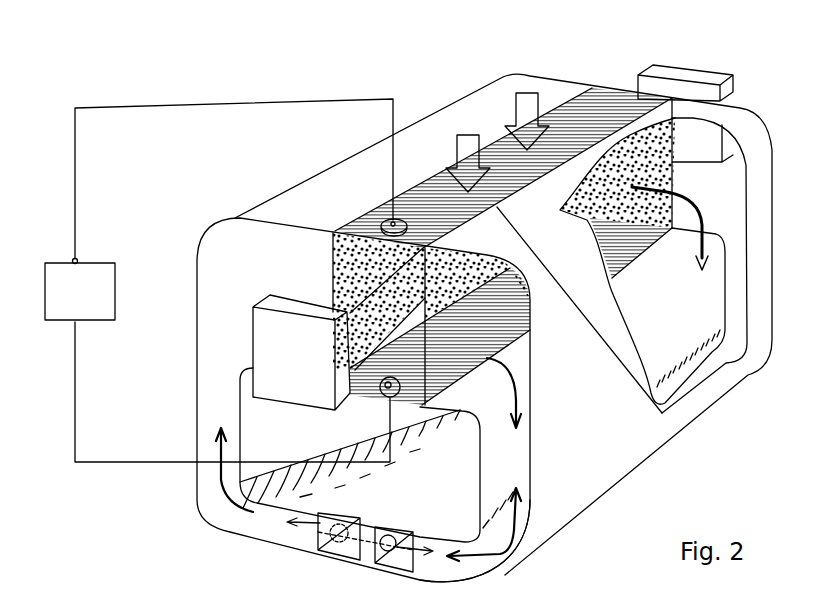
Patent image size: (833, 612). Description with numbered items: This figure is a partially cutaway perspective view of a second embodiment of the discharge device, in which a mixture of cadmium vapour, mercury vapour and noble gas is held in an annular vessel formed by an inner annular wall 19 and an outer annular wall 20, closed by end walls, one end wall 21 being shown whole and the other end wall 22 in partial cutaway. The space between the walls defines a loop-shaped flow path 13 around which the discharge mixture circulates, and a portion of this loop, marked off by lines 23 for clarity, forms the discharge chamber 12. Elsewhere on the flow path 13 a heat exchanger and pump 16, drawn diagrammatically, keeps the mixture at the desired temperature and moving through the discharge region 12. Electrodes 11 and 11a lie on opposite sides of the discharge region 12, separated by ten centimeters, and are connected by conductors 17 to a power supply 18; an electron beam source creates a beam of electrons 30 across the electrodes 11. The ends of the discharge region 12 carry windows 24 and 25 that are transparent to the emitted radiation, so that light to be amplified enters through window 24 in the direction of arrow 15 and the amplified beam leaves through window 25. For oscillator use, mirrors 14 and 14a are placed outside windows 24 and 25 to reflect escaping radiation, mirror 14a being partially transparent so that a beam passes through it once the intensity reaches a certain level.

The electrode 11 is at (470, 377).
The electrode 11a is at (662, 413).
The discharge chamber 12 is at (375, 293).
The loop-shaped flow path 13 is at (504, 567).
The mirror 14 is at (247, 357).
The mirror 14a is at (744, 94).
The arrow 15 is at (402, 327).
The heat exchanger and pump 16 is at (335, 553).
The conductors 17 is at (222, 97).
The power supply 18 is at (80, 291).
The inner annular wall 19 is at (481, 484).
The outer annular wall 20 is at (528, 513).
The end wall 21 is at (733, 180).
The end wall 22 is at (212, 264).
The lines 23 is at (503, 209).
The window 24 is at (347, 262).
The window 25 is at (630, 170).
The beam of electrons 30 is at (510, 100).